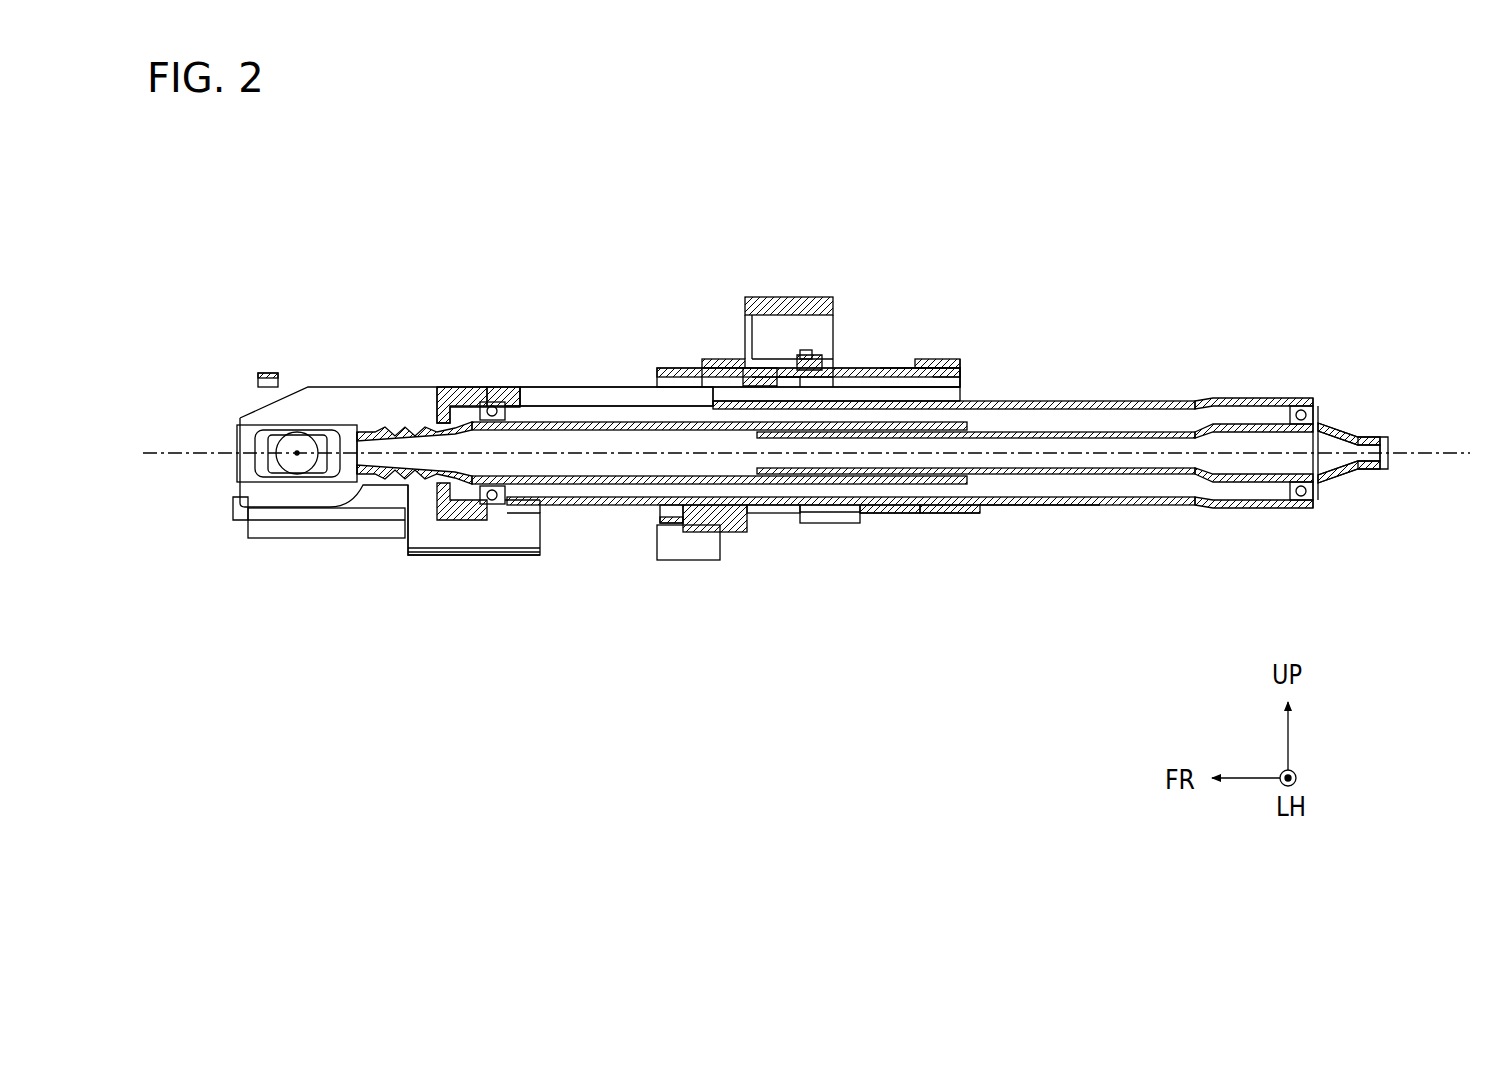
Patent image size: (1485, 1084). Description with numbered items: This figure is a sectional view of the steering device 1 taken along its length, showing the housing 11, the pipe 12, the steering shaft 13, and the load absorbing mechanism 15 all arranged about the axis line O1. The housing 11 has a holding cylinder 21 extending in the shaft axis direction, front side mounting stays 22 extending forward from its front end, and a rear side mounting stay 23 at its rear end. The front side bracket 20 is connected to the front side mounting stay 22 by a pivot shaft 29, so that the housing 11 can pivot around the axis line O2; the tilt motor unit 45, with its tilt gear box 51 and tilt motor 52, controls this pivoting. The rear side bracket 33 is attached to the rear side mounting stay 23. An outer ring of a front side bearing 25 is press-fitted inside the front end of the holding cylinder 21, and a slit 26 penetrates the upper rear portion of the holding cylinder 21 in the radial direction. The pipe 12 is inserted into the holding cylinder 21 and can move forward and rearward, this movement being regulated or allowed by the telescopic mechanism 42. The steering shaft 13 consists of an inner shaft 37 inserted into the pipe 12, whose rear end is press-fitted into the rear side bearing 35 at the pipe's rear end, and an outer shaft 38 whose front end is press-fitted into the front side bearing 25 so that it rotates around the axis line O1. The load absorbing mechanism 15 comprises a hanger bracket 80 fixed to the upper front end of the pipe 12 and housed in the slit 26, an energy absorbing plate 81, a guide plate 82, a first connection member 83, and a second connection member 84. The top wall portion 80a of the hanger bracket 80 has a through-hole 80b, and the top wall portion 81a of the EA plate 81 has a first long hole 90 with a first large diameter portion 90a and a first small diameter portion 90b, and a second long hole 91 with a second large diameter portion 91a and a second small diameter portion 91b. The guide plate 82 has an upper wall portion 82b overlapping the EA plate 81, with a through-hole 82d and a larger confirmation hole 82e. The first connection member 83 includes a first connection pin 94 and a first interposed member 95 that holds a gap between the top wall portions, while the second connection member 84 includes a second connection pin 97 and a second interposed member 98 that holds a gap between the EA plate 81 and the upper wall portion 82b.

The steering device 1 is at (283, 295).
The housing 11 is at (398, 383).
The pipe 12 is at (1150, 510).
The steering shaft 13 is at (1130, 690).
The load absorbing mechanism 15 is at (906, 364).
The front side bracket 20 is at (268, 373).
The holding cylinder 21 is at (775, 486).
The front side mounting stay 22 is at (330, 388).
The rear side mounting stay 23 is at (958, 371).
The front side bearing 25 is at (492, 502).
The slit 26 is at (597, 403).
The pivot shaft 29 is at (285, 468).
The rear side bracket 33 is at (753, 370).
The rear side bearing 35 is at (1302, 500).
The inner shaft 37 is at (1038, 506).
The outer shaft 38 is at (988, 506).
The telescopic mechanism 42 is at (405, 549).
The tilt motor unit 45 is at (160, 525).
The tilt gear box 51 is at (415, 512).
The tilt motor 52 is at (248, 530).
The hanger bracket 80 is at (855, 384).
The top wall portion 80a is at (830, 518).
The through-hole 80b is at (790, 396).
The energy absorbing plate 81 is at (658, 369).
The top wall portion 81a is at (960, 379).
The guide plate 82 is at (712, 358).
The upper wall portion 82b is at (741, 366).
The through-hole 82d is at (803, 350).
The confirmation hole 82e is at (776, 356).
The first connection member 83 is at (770, 400).
The second connection member 84 is at (813, 348).
The first long hole 90 is at (715, 690).
The first large diameter portion 90a is at (755, 398).
The first small diameter portion 90b is at (740, 398).
The second long hole 91 is at (980, 690).
The second large diameter portion 91a is at (870, 480).
The second small diameter portion 91b is at (918, 500).
The first connection pin 94 is at (747, 352).
The first interposed member 95 is at (735, 371).
The second connection pin 97 is at (846, 373).
The second interposed member 98 is at (840, 379).
The axis line O1 is at (1440, 440).
The axis line O2 is at (297, 453).